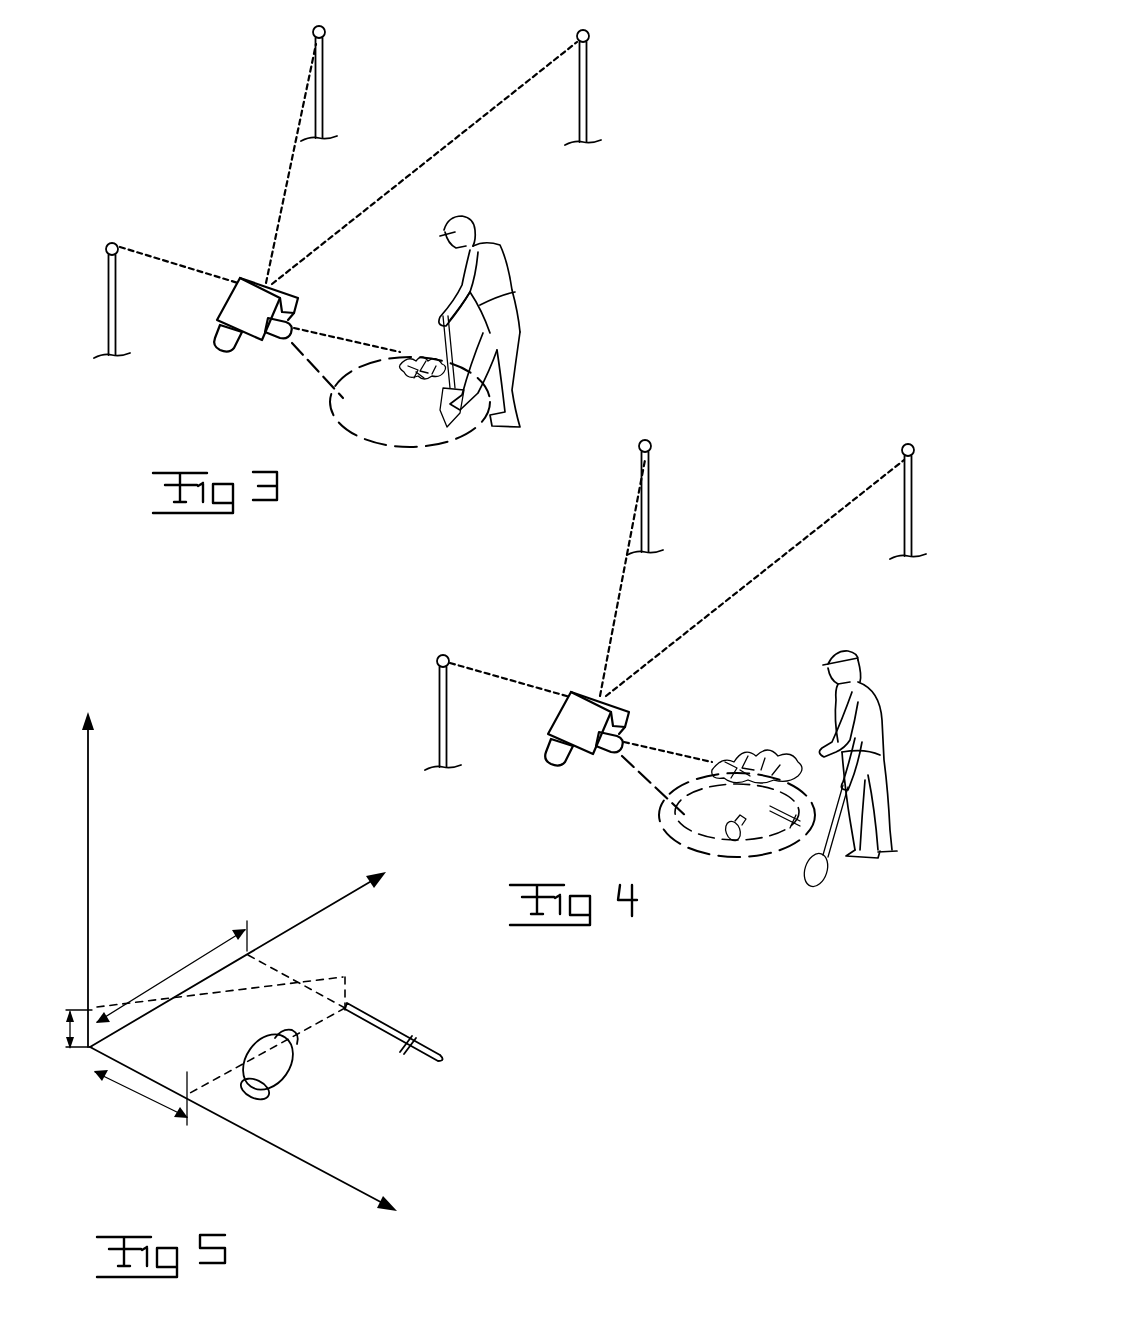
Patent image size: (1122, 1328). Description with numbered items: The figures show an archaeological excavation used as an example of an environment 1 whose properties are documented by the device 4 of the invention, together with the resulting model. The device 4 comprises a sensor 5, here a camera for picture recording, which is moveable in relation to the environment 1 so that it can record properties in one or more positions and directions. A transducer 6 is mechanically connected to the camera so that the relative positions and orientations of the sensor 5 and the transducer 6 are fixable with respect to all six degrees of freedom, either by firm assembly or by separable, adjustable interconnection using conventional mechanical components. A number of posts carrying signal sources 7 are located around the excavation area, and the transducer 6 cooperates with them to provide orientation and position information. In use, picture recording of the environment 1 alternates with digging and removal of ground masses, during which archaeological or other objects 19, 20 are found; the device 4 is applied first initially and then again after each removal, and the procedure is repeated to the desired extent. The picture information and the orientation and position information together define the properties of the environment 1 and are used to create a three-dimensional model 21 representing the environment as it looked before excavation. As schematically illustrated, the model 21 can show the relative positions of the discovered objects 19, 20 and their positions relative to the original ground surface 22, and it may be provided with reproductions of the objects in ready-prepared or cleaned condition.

In FIG. 3, the environment 1 is at (381, 456).
In FIG. 3, the device 4 is at (194, 354).
In FIG. 3, the sensor 5 is at (252, 320).
In FIG. 4, the sensor 5 is at (580, 742).
In FIG. 3, the transducer 6 is at (262, 282).
In FIG. 4, the transducer 6 is at (592, 696).
In FIG. 3, the signal sources 7 is at (313, 32).
In FIG. 4, the signal sources 7 is at (646, 442).
In FIG. 4, the object 19 is at (725, 840).
In FIG. 5, the object 19 is at (280, 1078).
In FIG. 4, the object 20 is at (782, 826).
In FIG. 5, the object 20 is at (442, 1040).
In FIG. 5, the model 21 is at (278, 916).
In FIG. 5, the original ground surface 22 is at (73, 1006).